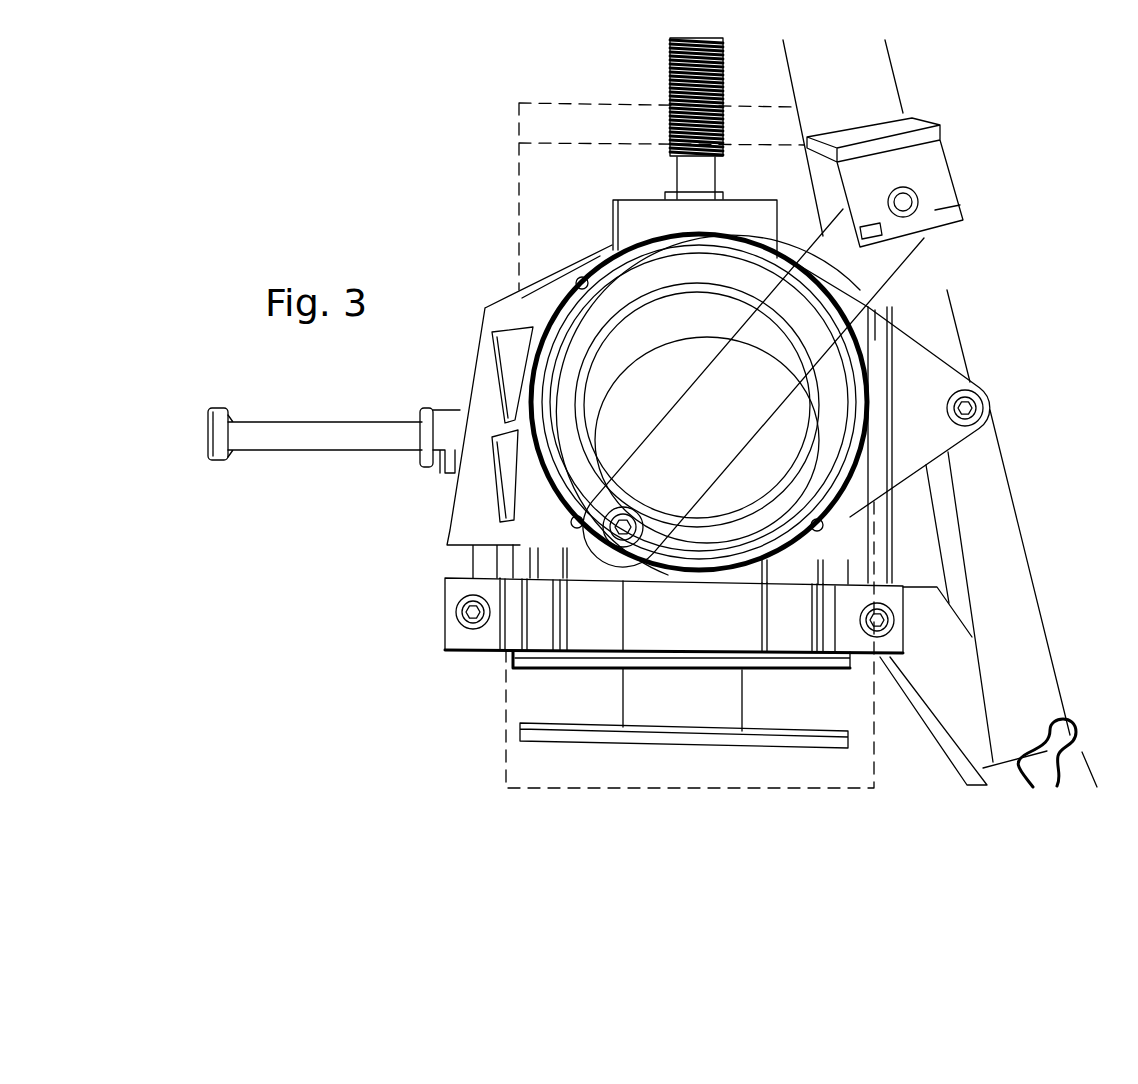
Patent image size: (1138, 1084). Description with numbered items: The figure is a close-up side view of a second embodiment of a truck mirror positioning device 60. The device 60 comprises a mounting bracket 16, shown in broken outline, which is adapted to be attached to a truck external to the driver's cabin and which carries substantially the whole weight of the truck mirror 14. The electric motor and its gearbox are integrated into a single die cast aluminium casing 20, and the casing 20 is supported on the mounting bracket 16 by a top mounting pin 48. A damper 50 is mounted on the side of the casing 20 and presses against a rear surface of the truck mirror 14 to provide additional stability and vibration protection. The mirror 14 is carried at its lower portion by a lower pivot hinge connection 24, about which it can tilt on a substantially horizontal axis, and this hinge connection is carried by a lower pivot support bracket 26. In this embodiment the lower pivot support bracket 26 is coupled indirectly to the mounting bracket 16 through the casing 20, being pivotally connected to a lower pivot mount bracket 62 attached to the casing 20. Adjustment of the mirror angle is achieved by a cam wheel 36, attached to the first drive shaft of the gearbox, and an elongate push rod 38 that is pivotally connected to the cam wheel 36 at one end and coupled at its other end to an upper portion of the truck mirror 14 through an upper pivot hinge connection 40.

The truck mirror 14 is at (903, 87).
The mounting bracket 16 is at (518, 130).
The casing 20 is at (594, 268).
The lower pivot hinge connection 24 is at (1085, 738).
The lower pivot support bracket 26 is at (1012, 546).
The cam wheel 36 is at (622, 386).
The push rod 38 is at (857, 280).
The upper pivot hinge connection 40 is at (968, 170).
The top mounting pin 48 is at (670, 79).
The damper 50 is at (437, 404).
The truck mirror positioning device 60 is at (1063, 207).
The lower pivot mount bracket 62 is at (927, 367).